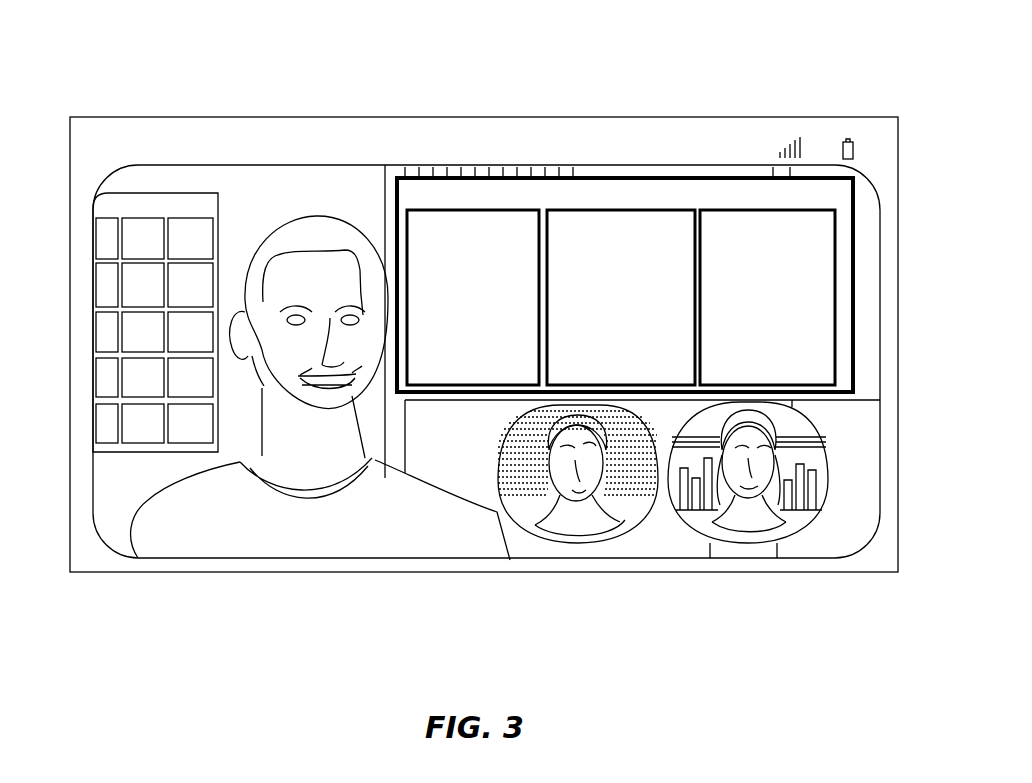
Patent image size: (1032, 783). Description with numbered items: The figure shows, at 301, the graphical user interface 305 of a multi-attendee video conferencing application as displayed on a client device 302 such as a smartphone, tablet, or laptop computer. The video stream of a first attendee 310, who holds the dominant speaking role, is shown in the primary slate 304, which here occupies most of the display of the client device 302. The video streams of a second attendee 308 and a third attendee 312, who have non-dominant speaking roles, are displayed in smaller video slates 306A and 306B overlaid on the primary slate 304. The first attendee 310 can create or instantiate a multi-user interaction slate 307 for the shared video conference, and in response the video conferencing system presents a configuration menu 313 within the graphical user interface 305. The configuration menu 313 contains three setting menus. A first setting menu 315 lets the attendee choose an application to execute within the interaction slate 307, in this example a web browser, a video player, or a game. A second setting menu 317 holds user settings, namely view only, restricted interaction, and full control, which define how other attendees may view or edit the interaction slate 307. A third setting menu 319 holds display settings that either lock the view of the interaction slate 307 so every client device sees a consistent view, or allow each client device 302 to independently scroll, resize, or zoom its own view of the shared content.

The example graphical user interface view 301 is at (96, 82).
The client device 302 is at (662, 117).
The primary slate 304 is at (93, 215).
The graphical user interface 305 is at (326, 178).
The video slate 306A is at (500, 505).
The video slate 306B is at (673, 510).
The interaction slate 307 is at (587, 178).
The second attendee 308 is at (560, 510).
The first attendee 310 is at (258, 386).
The third attendee 312 is at (693, 510).
The configuration menu 313 is at (843, 272).
The first setting menu 315 is at (473, 297).
The second setting menu 317 is at (621, 297).
The third setting menu 319 is at (774, 300).